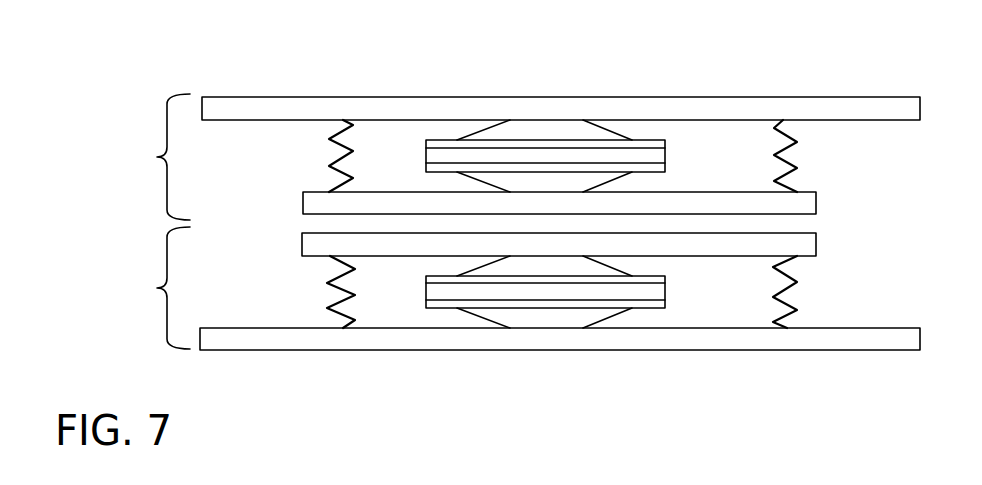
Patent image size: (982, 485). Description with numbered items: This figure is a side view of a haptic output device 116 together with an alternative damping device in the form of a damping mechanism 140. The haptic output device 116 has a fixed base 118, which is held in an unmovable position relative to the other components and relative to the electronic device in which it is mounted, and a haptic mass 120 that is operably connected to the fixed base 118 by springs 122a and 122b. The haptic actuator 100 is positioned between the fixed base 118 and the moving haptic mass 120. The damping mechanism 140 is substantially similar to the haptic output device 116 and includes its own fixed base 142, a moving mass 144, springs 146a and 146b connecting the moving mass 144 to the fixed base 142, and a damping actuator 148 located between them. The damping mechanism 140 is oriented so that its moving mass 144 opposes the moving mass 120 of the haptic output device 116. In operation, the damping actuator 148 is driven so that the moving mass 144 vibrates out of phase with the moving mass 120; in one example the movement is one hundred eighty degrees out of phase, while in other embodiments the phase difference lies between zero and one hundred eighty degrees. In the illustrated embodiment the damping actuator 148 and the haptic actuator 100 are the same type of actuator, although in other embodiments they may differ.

The haptic actuator 100 is at (665, 293).
The haptic output device 116 is at (148, 287).
The fixed base 118 is at (832, 350).
The haptic mass 120 is at (816, 245).
The spring 122a is at (332, 299).
The spring 122b is at (790, 303).
The damping mechanism 140 is at (148, 156).
The fixed base 142 is at (833, 97).
The moving mass 144 is at (816, 203).
The spring 146a is at (328, 148).
The spring 146b is at (792, 145).
The damping actuator 148 is at (665, 150).